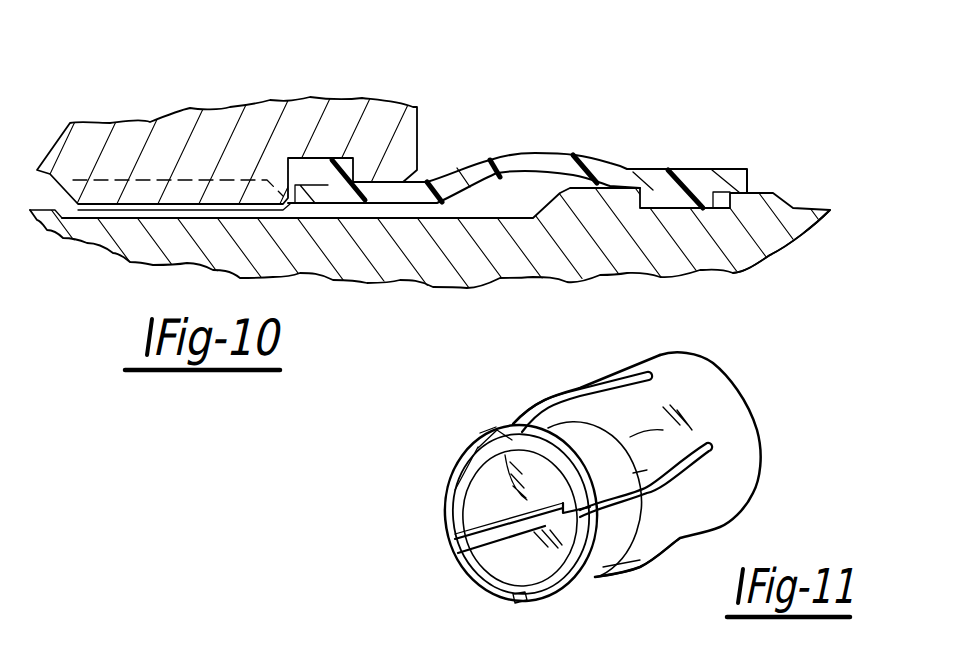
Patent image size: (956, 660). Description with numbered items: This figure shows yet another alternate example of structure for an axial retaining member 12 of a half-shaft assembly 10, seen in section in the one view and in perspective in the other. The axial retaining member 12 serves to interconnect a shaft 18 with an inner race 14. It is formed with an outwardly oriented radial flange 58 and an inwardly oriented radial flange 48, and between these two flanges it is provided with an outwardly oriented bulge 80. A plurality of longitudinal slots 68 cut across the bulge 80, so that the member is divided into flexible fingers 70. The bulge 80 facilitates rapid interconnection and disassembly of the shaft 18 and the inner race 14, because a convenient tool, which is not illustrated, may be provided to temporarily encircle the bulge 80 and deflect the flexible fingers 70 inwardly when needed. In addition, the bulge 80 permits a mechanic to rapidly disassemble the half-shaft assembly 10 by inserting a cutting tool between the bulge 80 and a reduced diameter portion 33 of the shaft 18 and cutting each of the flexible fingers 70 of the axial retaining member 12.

In FIG. 10, the half-shaft assembly 10 is at (459, 170).
In FIG. 10, the axial retaining member 12 is at (517, 136).
In FIG. 11, the axial retaining member 12 is at (637, 437).
In FIG. 10, the inner race 14 is at (242, 131).
In FIG. 10, the shaft 18 is at (459, 262).
In FIG. 10, the reduced diameter portion 33 is at (555, 152).
In FIG. 10, the inwardly oriented radial flange 48 is at (789, 249).
In FIG. 10, the outwardly oriented radial flange 58 is at (329, 121).
In FIG. 11, the outwardly oriented radial flange 58 is at (521, 492).
In FIG. 10, the longitudinal slots 68 is at (668, 157).
In FIG. 11, the longitudinal slots 68 is at (705, 448).
In FIG. 10, the flexible fingers 70 is at (456, 175).
In FIG. 11, the flexible fingers 70 is at (582, 382).
In FIG. 10, the outwardly oriented bulge 80 is at (488, 126).
In FIG. 11, the outwardly oriented bulge 80 is at (643, 583).